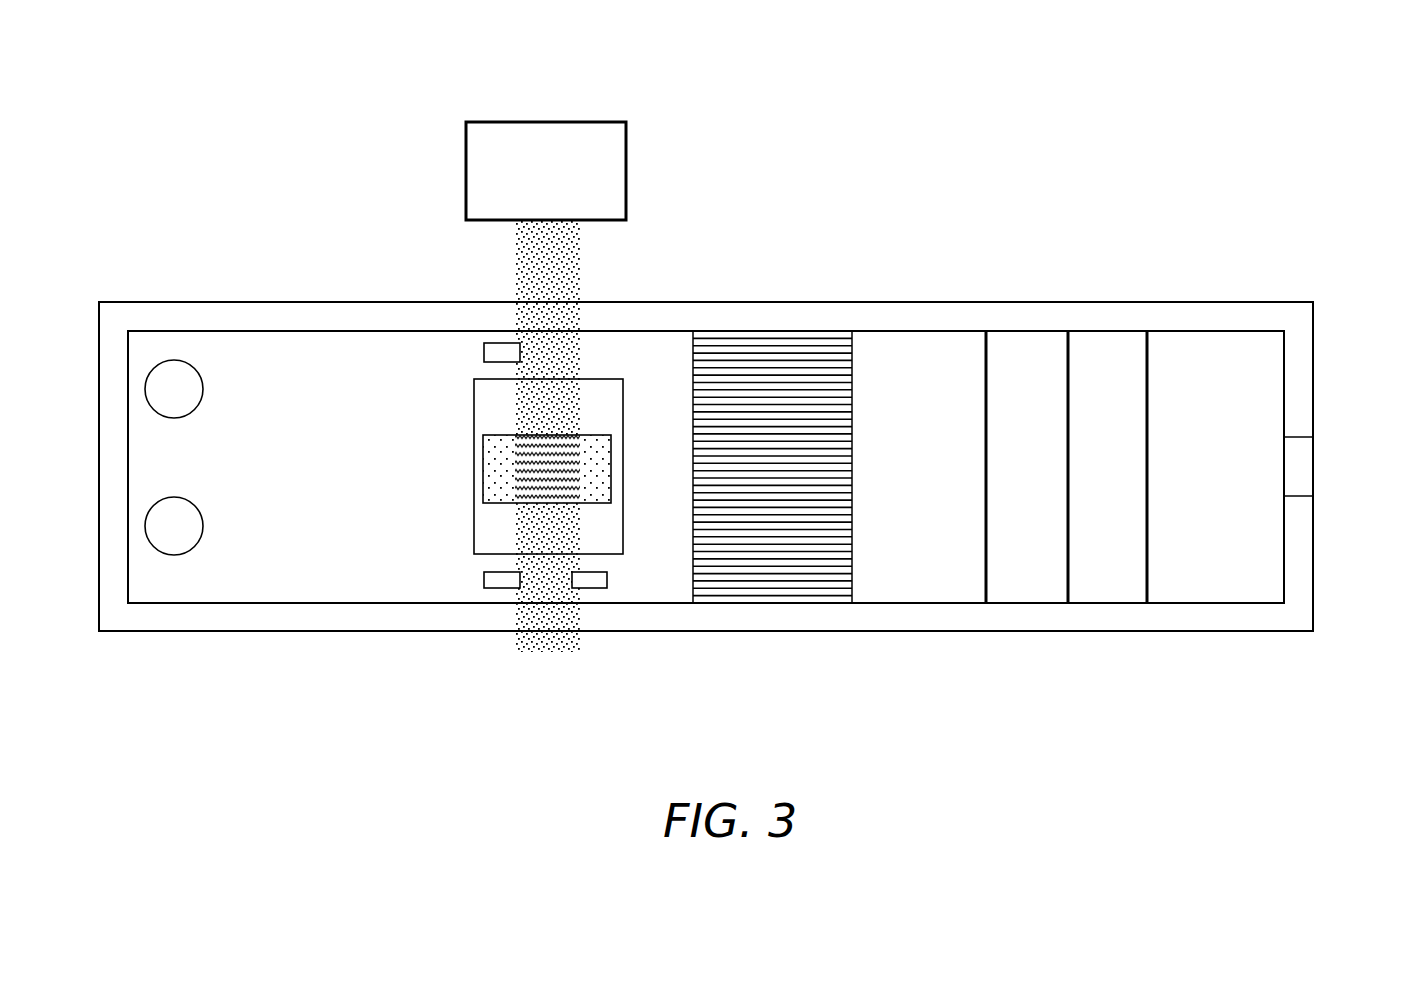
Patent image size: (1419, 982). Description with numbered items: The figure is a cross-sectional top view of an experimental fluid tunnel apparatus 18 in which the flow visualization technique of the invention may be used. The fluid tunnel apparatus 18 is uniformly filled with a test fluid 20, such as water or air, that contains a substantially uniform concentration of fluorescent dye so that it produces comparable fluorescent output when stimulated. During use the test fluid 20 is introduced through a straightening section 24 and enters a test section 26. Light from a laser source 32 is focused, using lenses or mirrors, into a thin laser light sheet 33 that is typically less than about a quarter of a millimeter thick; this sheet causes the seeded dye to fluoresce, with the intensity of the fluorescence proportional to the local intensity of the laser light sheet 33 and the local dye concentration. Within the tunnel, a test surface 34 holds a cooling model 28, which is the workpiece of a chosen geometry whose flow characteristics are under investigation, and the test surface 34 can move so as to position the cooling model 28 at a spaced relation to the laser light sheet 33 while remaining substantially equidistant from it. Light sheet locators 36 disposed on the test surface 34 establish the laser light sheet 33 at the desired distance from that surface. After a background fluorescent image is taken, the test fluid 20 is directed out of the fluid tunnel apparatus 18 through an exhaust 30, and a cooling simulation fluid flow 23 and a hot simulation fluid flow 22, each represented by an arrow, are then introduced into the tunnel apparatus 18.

The fluid tunnel apparatus 18 is at (164, 107).
The test fluid 20 is at (1236, 467).
The hot simulation fluid flow 22 is at (1066, 467).
The cooling simulation fluid flow 23 is at (772, 467).
The straightening section 24 is at (1175, 622).
The test section 26 is at (657, 590).
The cooling model 28 is at (617, 418).
The exhaust 30 is at (174, 389).
The laser source 32 is at (628, 181).
The laser light sheet 33 is at (512, 258).
The test surface 34 is at (395, 415).
The light sheet locators 36 is at (482, 353).